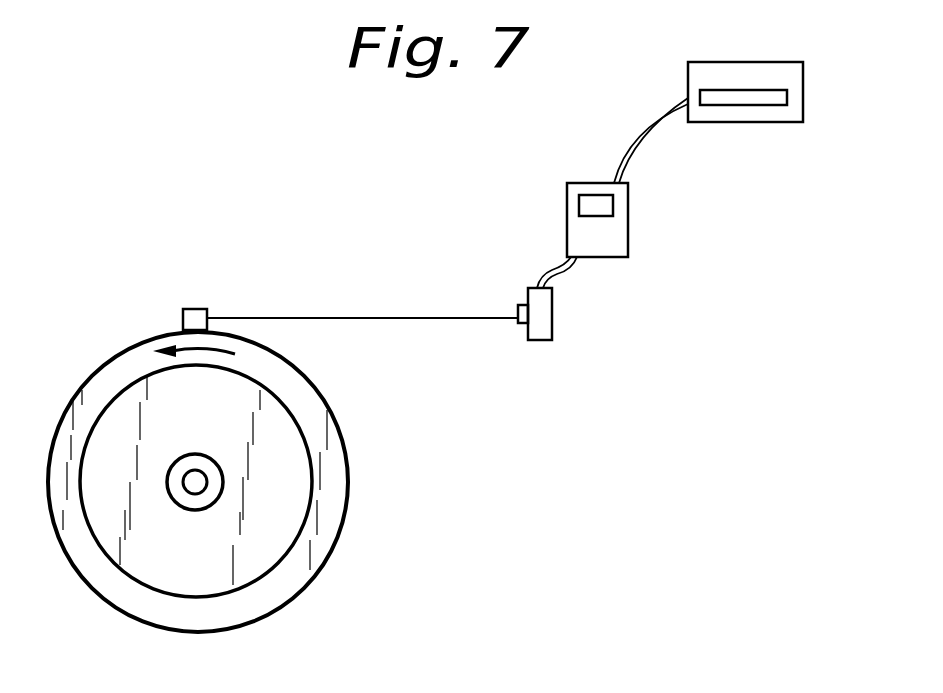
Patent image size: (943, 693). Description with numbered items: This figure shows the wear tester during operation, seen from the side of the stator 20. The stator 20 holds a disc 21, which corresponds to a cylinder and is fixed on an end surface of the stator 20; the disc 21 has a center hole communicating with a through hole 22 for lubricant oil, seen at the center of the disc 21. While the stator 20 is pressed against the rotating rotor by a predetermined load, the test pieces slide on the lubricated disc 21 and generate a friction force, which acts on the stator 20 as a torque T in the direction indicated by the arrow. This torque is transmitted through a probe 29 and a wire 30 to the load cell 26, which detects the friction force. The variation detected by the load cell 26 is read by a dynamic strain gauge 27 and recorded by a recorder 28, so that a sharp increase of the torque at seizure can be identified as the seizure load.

The stator 20 is at (308, 412).
The disc 21 is at (283, 473).
The through hole 22 is at (200, 483).
The load cell 26 is at (552, 313).
The dynamic strain gauge 27 is at (628, 200).
The recorder 28 is at (783, 124).
The probe 29 is at (193, 314).
The wire 30 is at (359, 315).